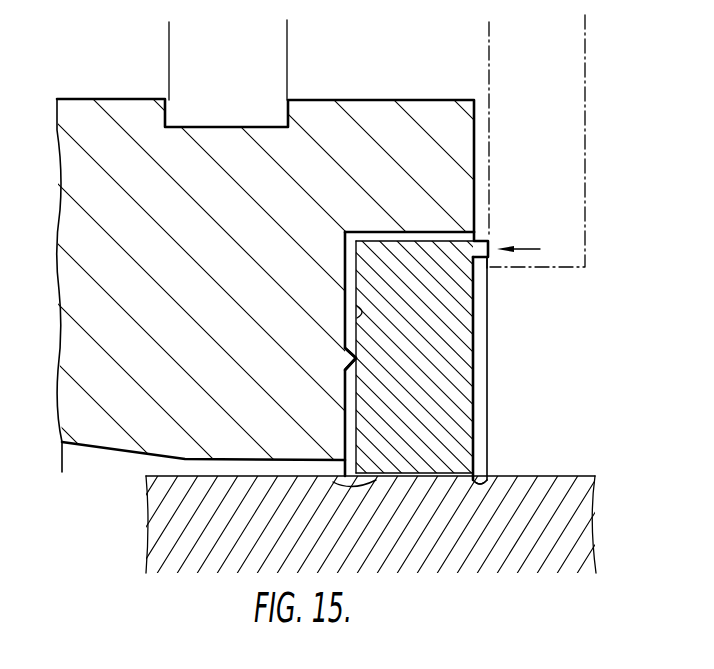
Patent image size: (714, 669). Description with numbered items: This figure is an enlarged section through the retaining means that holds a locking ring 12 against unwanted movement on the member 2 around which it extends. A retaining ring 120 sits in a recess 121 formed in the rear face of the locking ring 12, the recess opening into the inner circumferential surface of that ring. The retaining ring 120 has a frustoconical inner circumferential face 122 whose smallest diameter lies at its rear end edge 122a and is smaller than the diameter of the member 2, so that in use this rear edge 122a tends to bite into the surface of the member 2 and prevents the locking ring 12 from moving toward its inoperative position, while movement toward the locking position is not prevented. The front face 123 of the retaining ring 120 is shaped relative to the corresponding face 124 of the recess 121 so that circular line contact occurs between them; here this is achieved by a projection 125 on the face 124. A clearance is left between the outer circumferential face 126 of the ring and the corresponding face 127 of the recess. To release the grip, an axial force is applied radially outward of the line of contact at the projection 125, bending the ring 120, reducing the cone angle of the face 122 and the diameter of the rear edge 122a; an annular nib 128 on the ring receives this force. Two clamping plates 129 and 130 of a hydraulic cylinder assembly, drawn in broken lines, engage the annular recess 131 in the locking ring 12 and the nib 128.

The member 2 is at (183, 511).
The locking ring 12 is at (172, 269).
The retaining ring 120 is at (433, 395).
The recess 121 is at (353, 262).
The frustoconical inner circumferential face 122 is at (333, 482).
The rear end edge 122a is at (499, 478).
The front face 123 is at (357, 397).
The face of the recess 124 is at (356, 309).
The projection 125 is at (357, 355).
The outer circumferential face 126 is at (433, 239).
The face of the recess 127 is at (434, 241).
The annular nib 128 is at (488, 245).
The clamping plate 129 is at (288, 72).
The clamping plate 130 is at (586, 83).
The annular recess 131 is at (168, 110).